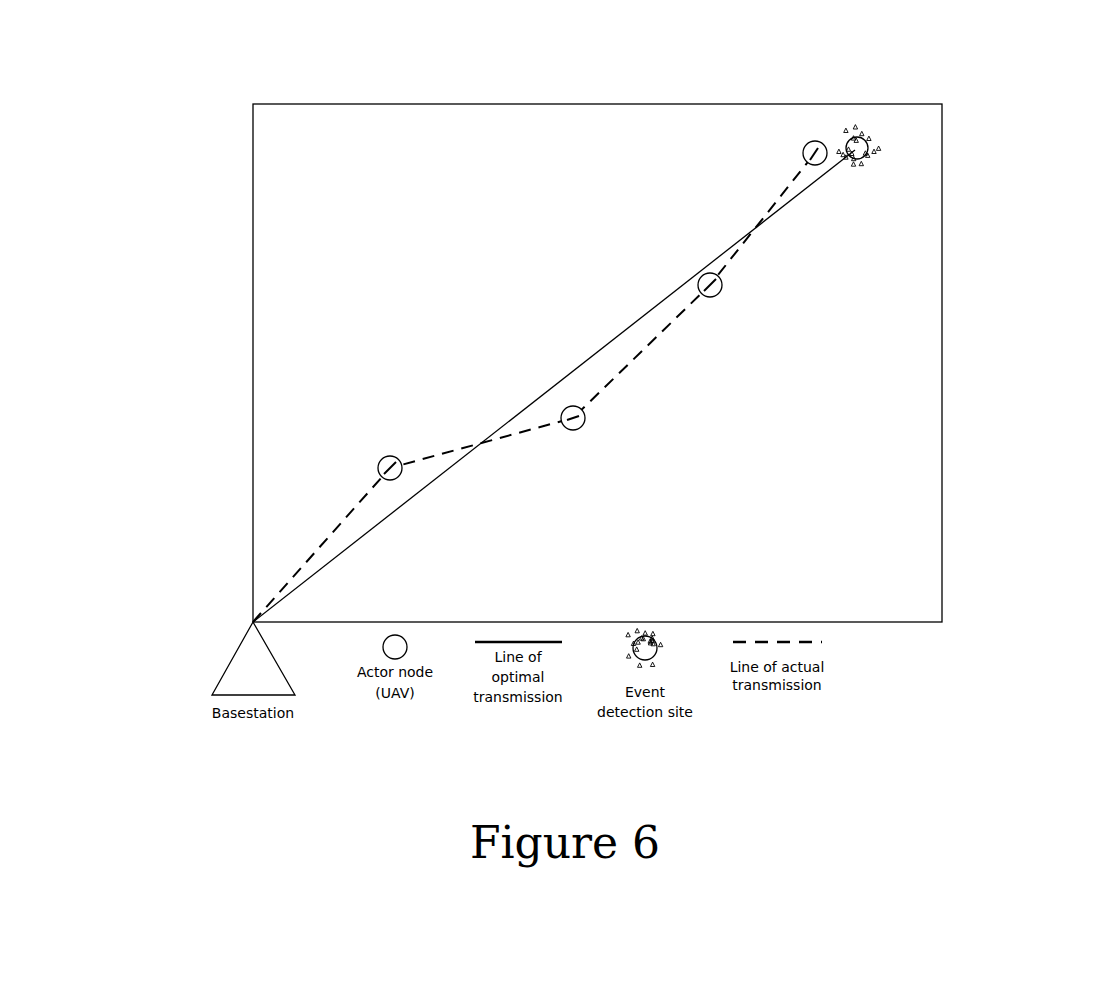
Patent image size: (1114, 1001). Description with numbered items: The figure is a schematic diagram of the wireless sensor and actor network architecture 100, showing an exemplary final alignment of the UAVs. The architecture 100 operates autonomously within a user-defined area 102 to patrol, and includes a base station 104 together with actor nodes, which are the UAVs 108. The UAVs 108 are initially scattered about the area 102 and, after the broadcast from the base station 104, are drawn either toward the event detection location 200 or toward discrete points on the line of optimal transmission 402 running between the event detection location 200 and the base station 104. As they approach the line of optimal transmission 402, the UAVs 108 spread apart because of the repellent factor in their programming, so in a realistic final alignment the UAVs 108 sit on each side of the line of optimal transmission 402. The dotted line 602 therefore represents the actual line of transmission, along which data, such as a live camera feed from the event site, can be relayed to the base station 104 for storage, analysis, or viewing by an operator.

The wireless sensor and actor network (WSAN) architecture 100 is at (1031, 92).
The area 102 is at (322, 150).
The base station 104 is at (230, 677).
The actor nodes (UAVs) 108 is at (378, 462).
The event detection location 200 is at (856, 186).
The line of optimal transmission 402 is at (593, 353).
The actual line of transmission 602 is at (655, 340).